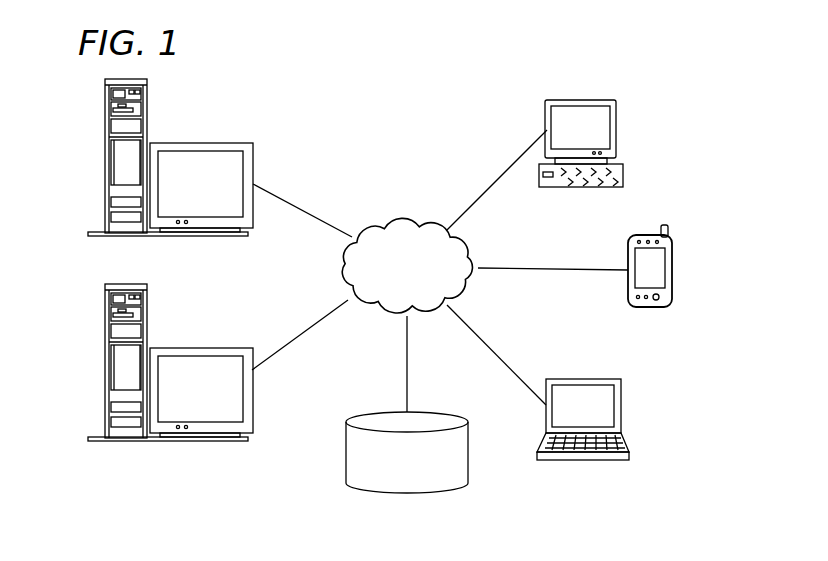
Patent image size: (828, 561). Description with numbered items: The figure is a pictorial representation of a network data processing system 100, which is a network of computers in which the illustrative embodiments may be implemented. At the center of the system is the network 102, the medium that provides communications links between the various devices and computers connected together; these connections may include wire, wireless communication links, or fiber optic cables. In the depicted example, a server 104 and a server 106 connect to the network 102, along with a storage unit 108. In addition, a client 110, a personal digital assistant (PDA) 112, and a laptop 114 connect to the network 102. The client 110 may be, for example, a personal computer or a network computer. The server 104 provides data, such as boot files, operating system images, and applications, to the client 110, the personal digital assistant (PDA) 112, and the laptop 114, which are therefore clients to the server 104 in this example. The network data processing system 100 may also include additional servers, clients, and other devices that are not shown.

The network data processing system 100 is at (458, 108).
The network 102 is at (375, 220).
The server 104 is at (107, 158).
The server 106 is at (148, 376).
The storage unit 108 is at (390, 495).
The client 110 is at (617, 129).
The personal digital assistant (PDA) 112 is at (673, 262).
The laptop 114 is at (622, 405).